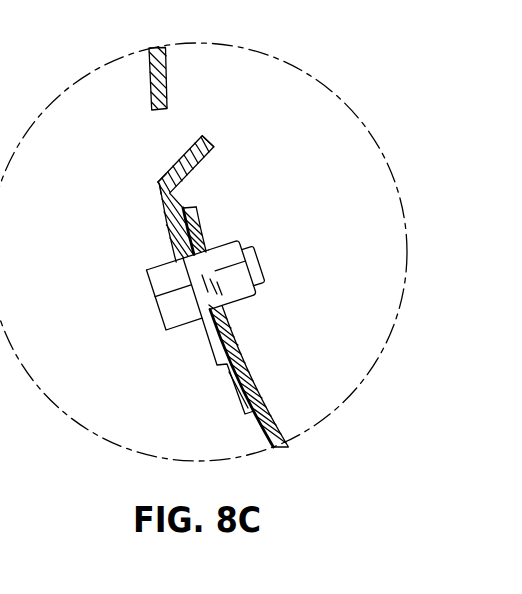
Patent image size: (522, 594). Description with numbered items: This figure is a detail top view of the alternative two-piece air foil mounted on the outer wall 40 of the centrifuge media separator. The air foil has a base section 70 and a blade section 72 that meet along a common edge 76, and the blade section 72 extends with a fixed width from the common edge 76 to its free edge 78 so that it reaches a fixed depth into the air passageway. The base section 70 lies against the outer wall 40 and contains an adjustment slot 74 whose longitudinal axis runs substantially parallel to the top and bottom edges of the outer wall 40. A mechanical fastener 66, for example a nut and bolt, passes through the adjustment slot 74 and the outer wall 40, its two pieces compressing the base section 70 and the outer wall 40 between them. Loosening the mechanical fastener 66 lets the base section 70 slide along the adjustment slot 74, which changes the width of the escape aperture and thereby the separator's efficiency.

The outer wall 40 is at (252, 380).
The mechanical fastener 66 is at (248, 323).
The base section 70 is at (176, 232).
The blade section 72 is at (192, 169).
The adjustment slot 74 is at (211, 340).
The common edge 76 is at (157, 185).
The free edge 78 is at (218, 142).